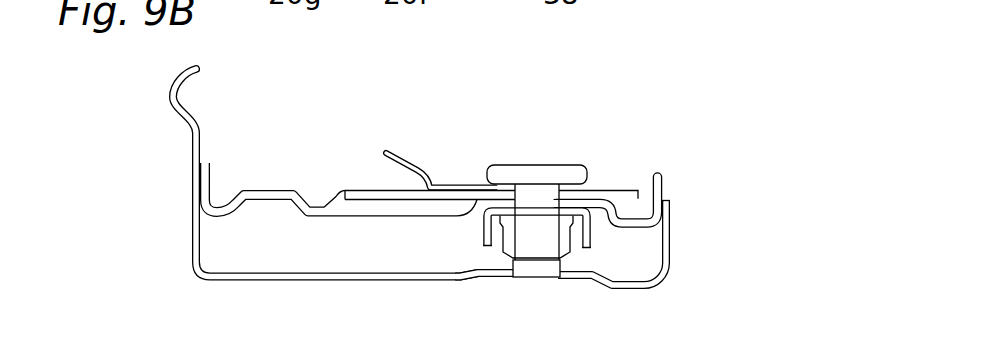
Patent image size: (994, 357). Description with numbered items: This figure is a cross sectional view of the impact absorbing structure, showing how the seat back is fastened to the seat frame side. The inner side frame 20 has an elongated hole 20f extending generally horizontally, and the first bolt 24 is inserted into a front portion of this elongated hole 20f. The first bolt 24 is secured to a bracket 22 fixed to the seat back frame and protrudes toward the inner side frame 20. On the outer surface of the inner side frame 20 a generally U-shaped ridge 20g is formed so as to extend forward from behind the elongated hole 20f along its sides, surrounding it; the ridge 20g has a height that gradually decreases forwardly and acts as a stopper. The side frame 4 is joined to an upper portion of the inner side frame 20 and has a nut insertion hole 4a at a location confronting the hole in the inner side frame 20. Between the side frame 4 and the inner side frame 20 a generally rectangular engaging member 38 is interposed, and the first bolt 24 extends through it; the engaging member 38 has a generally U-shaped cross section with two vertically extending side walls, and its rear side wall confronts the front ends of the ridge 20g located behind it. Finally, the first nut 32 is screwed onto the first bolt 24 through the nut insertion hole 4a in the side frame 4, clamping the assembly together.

The side frame 4 is at (271, 282).
The nut insertion hole 4a is at (502, 282).
The inner side frame 20 is at (669, 175).
The elongated hole 20f is at (405, 200).
The ridge 20g is at (377, 213).
The bracket 22 is at (420, 167).
The first bolt 24 is at (568, 165).
The first nut 32 is at (572, 252).
The engaging member 38 is at (598, 237).